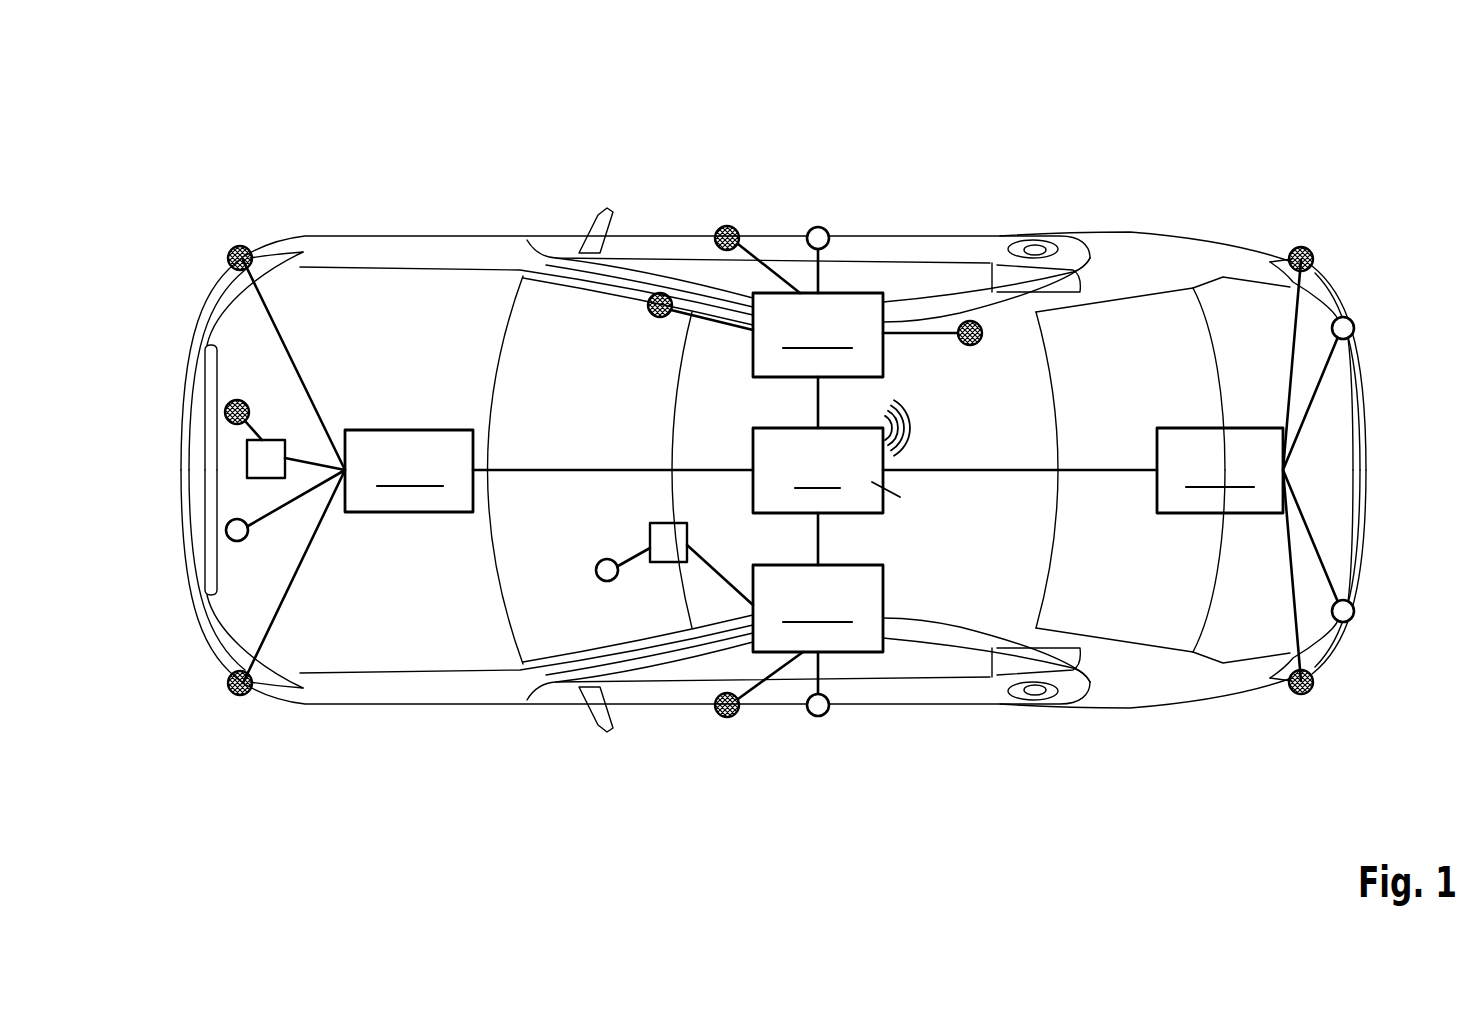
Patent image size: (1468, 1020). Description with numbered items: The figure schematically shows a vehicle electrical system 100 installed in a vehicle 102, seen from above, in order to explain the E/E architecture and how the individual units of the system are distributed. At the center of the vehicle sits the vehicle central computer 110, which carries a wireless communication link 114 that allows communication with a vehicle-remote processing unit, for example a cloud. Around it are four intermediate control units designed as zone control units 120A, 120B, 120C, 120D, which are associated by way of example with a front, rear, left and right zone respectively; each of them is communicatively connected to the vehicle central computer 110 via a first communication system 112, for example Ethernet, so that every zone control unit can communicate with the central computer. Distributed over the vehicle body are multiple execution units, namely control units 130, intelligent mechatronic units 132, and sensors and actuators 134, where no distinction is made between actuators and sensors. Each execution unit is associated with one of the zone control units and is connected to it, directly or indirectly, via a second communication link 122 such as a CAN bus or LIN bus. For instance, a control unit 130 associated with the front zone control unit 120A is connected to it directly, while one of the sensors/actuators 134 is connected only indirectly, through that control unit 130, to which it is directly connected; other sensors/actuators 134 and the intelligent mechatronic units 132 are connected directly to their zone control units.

The vehicle electrical system 100 is at (189, 102).
The vehicle 102 is at (386, 233).
The vehicle central computer 110 is at (879, 471).
The first communication system 112 is at (557, 469).
The wireless communication link 114 is at (910, 437).
The zone control unit 120A is at (358, 556).
The zone control unit 120B is at (1248, 470).
The zone control unit 120C is at (785, 622).
The zone control unit 120D is at (814, 310).
The second communication link 122 is at (295, 363).
The control unit 130 is at (247, 458).
The intelligent mechatronic unit 132 is at (225, 531).
The sensor/actuator 134 is at (240, 247).